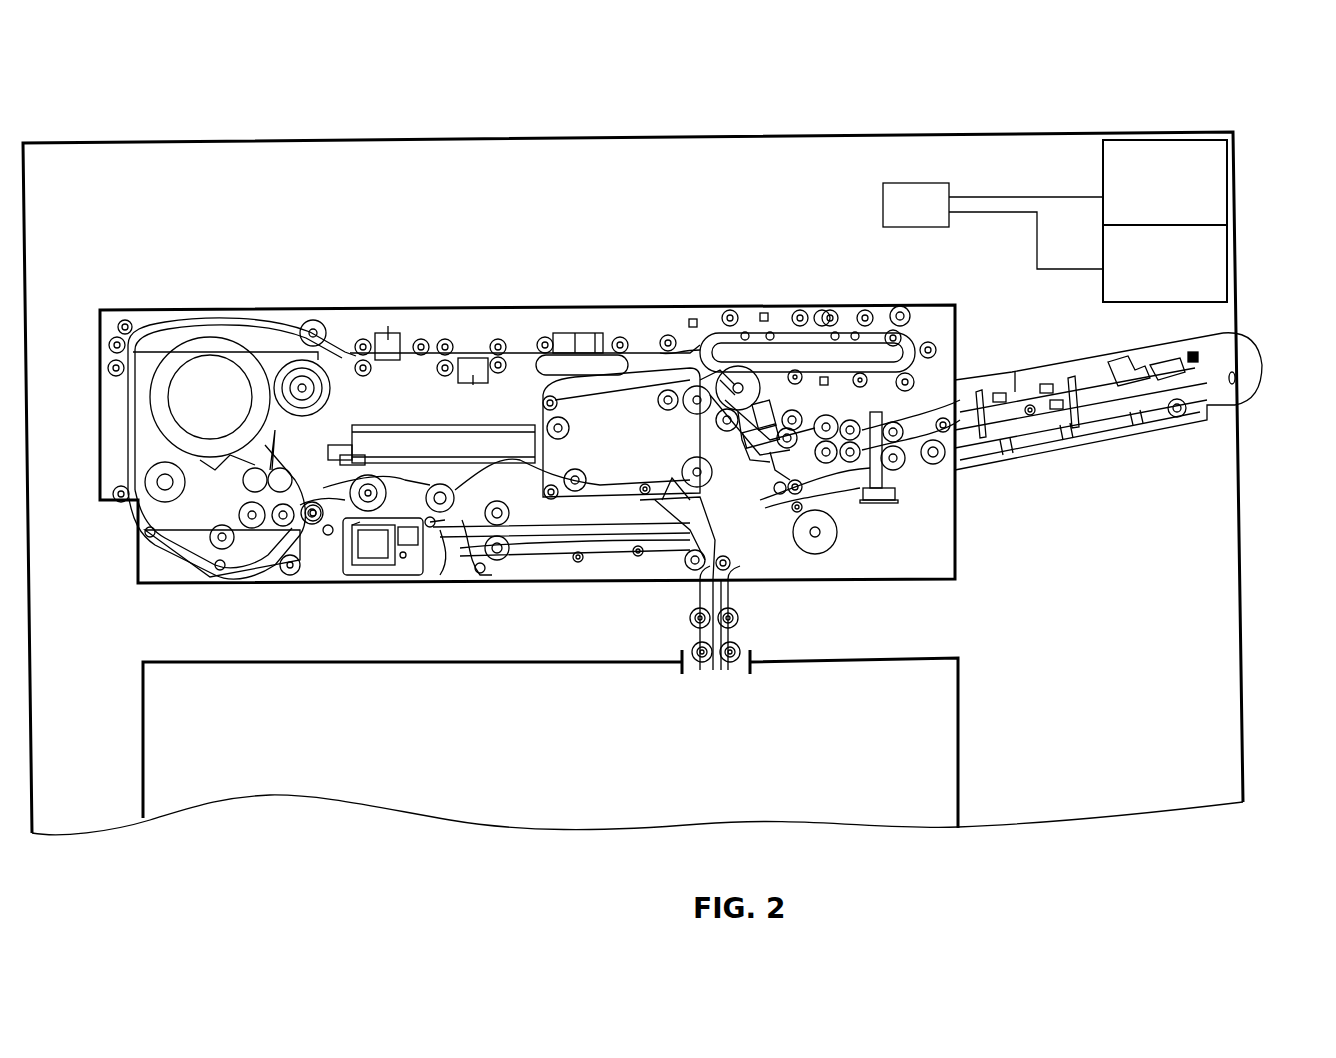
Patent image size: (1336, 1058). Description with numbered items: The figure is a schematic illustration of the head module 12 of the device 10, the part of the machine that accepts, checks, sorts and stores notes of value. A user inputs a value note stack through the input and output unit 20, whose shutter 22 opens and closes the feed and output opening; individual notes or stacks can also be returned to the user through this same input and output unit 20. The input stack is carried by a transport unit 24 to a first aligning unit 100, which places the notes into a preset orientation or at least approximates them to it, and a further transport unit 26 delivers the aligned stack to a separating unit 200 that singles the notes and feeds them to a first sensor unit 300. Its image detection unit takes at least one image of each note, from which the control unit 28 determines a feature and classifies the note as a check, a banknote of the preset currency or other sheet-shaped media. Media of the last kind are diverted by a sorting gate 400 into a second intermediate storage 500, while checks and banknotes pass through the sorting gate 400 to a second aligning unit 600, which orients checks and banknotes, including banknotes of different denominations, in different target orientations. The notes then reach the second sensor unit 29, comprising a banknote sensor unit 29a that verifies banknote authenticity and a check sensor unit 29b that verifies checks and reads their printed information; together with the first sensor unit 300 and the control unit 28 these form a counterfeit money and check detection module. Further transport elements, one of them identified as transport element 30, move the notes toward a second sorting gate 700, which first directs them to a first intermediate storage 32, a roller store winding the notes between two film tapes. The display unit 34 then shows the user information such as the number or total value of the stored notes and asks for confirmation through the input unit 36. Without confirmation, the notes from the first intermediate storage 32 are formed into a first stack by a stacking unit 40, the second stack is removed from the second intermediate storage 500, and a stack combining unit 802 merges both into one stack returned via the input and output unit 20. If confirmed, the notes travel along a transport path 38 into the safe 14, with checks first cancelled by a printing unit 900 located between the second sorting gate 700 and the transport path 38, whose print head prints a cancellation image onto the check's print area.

The device 10 is at (1266, 100).
The head module 12 is at (118, 237).
The safe 14 is at (148, 710).
The input and output unit 20 is at (1134, 408).
The shutter 22 is at (1250, 380).
The transport unit 24 is at (1184, 448).
The transport unit 26 is at (977, 372).
The control unit 28 is at (888, 197).
The second sensor unit 29 is at (525, 281).
The banknote sensor unit 29a is at (581, 313).
The check sensor unit 29b is at (430, 313).
The transport element 30 is at (305, 325).
The first intermediate storage 32 is at (207, 385).
The display unit 34 is at (1207, 168).
The input unit 36 is at (1210, 258).
The transport path 38 is at (706, 595).
The stacking unit 40 is at (547, 520).
The first aligning unit 100 is at (1042, 470).
The separating unit 200 is at (571, 424).
The first sensor unit 300 is at (773, 452).
The sorting gate 400 is at (686, 392).
The second intermediate storage 500 is at (622, 522).
The second aligning unit 600 is at (940, 322).
The second sorting gate 700 is at (274, 585).
The stack combining unit 802 is at (862, 515).
The printing unit 900 is at (380, 587).